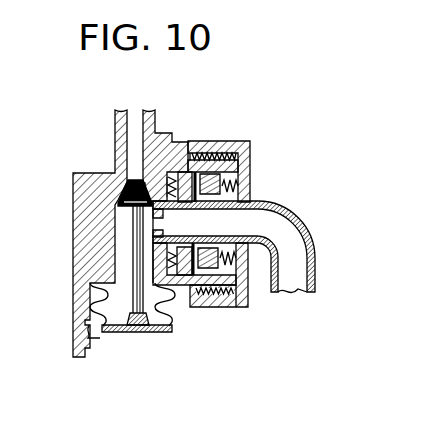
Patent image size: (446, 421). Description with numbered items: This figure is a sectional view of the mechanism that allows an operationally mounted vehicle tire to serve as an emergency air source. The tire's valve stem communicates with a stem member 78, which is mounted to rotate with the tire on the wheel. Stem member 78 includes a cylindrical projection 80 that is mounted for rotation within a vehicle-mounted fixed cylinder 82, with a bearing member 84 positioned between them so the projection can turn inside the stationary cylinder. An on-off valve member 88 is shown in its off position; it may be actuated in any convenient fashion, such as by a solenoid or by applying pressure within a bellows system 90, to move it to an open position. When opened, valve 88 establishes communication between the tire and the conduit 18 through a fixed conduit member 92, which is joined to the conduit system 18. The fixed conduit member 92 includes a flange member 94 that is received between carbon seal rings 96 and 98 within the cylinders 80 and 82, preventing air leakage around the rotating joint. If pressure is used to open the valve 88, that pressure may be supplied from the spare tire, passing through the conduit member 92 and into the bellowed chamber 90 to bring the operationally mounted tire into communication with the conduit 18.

The conduit 18 is at (317, 260).
The stem member 78 is at (163, 135).
The cylindrical projection 80 is at (207, 158).
The fixed cylinder 82 is at (242, 141).
The bearing member 84 is at (229, 288).
The on-off valve member 88 is at (133, 237).
The bellows system 90 is at (132, 333).
The fixed conduit member 92 is at (303, 222).
The flange member 94 is at (192, 243).
The carbon seal ring 96 is at (182, 178).
The carbon seal ring 98 is at (220, 174).